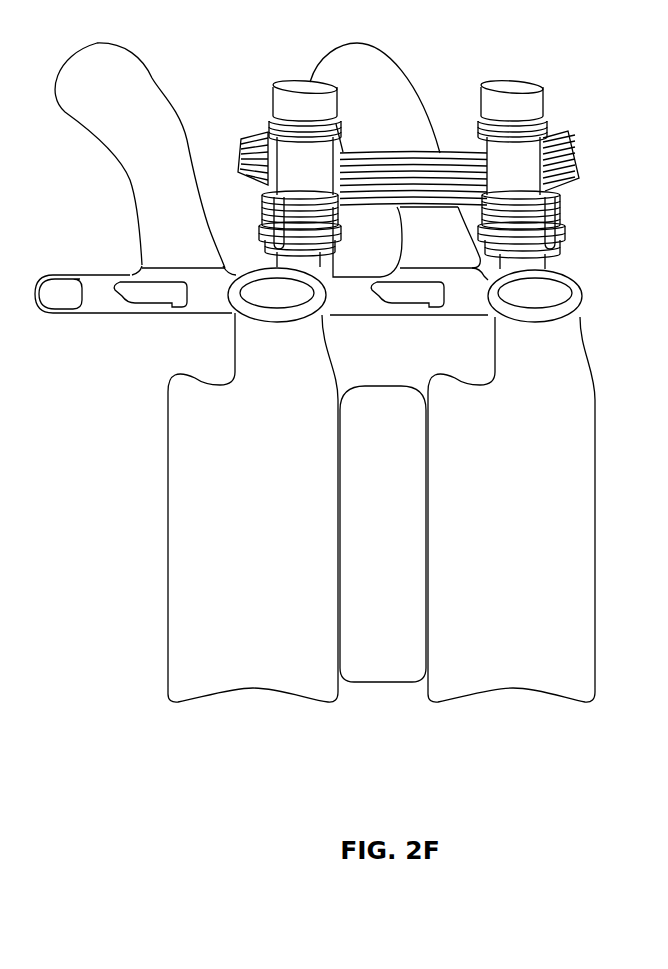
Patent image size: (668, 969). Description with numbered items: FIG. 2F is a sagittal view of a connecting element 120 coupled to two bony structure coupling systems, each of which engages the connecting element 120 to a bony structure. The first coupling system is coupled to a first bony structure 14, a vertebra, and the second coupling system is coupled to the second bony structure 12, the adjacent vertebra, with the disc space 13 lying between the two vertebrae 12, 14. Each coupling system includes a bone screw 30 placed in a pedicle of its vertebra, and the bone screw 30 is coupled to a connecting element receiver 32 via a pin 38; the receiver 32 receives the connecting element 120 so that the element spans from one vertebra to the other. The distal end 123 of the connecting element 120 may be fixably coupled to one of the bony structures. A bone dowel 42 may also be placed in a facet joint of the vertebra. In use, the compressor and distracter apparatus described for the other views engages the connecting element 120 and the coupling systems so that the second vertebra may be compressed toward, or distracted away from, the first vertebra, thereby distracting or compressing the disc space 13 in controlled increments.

The vertebra 12 is at (507, 690).
The disc space 13 is at (383, 683).
The vertebra 14 is at (250, 690).
The bone screw 30 is at (552, 260).
The receiver 32 is at (272, 92).
The pin 38 is at (563, 220).
The bone dowel 42 is at (338, 265).
The connecting element 120 is at (405, 152).
The distal end 123 is at (250, 137).